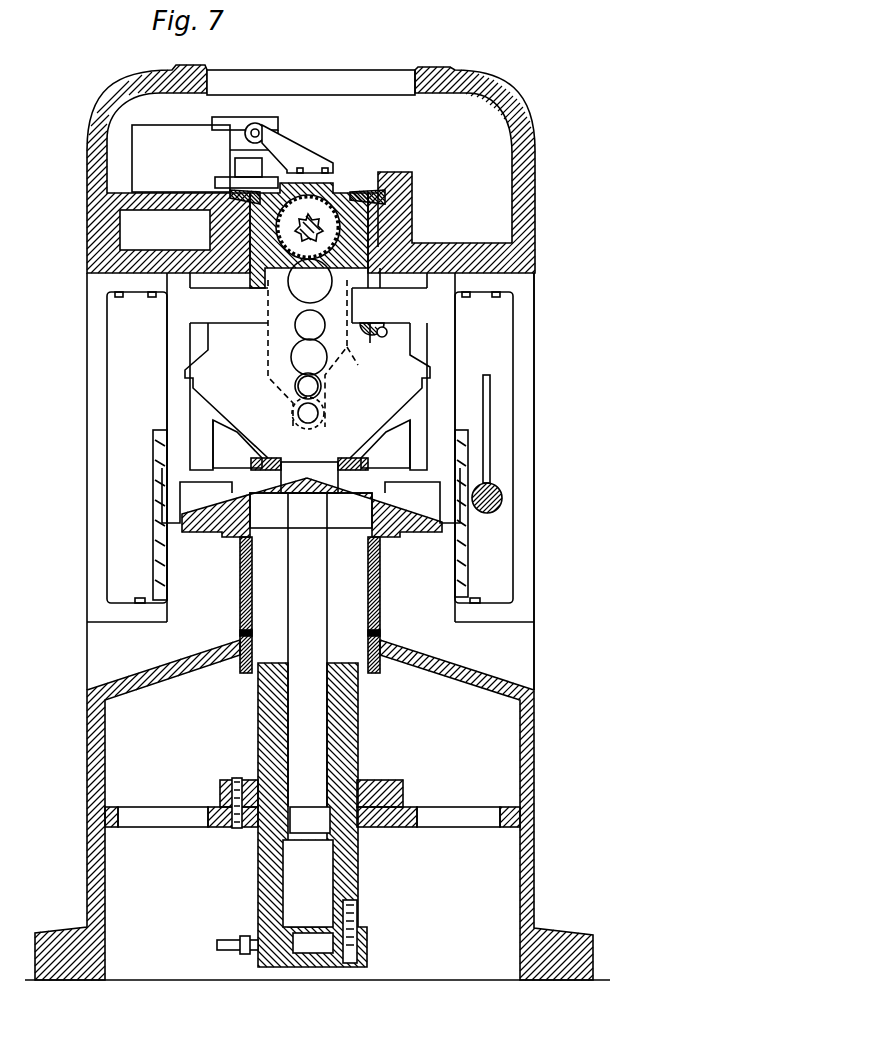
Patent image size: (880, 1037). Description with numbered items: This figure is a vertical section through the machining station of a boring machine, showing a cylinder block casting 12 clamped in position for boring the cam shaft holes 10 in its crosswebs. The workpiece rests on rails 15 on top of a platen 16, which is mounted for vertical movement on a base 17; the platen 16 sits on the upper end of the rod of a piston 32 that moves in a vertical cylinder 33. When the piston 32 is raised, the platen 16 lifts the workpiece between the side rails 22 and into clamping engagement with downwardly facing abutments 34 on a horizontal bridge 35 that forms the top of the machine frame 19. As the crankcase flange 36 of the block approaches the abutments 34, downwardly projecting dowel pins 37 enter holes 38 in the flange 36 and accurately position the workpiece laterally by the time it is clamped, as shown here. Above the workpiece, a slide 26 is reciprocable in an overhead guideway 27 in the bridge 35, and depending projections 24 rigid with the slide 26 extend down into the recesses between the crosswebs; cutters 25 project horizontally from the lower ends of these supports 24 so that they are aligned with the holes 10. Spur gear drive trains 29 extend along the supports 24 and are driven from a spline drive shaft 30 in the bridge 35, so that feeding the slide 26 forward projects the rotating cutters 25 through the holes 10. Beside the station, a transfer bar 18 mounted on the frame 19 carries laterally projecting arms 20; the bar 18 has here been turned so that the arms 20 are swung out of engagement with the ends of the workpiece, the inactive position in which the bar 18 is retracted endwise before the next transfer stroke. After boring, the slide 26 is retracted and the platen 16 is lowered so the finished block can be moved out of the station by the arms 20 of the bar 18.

The cam shaft holes 10 is at (320, 413).
The cylinder block casting 12 is at (410, 393).
The rails 15 is at (309, 463).
The platen 16 is at (224, 531).
The base 17 is at (86, 813).
The bar 18 is at (502, 498).
The machine frame 19 is at (528, 466).
The arms 20 is at (487, 374).
The side rails 22 is at (222, 440).
The projections 24 is at (348, 352).
The cutters 25 is at (297, 410).
The slide 26 is at (334, 194).
The guideway 27 is at (378, 204).
The spur gear drive trains 29 is at (290, 290).
The spline drive shaft 30 is at (308, 240).
The piston 32 is at (338, 838).
The cylinder 33 is at (336, 876).
The abutments 34 is at (187, 447).
The bridge 35 is at (531, 203).
The crankcase flange 36 is at (368, 328).
The dowel pins 37 is at (383, 342).
The holes 38 is at (385, 331).